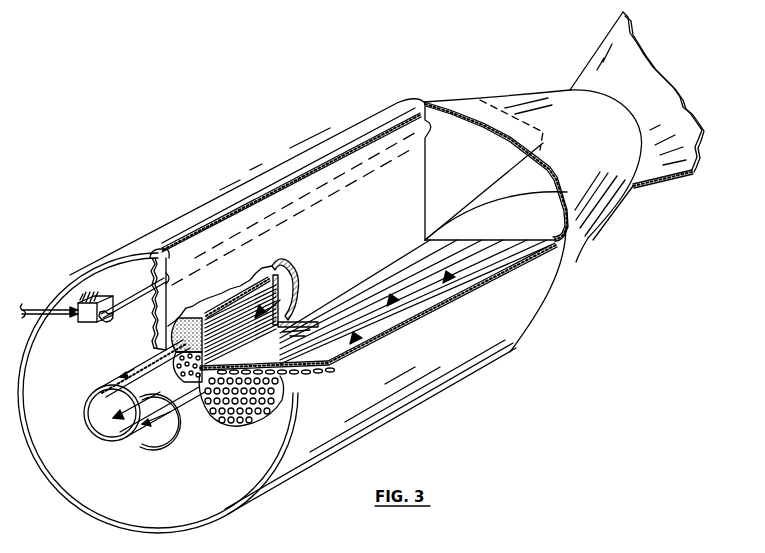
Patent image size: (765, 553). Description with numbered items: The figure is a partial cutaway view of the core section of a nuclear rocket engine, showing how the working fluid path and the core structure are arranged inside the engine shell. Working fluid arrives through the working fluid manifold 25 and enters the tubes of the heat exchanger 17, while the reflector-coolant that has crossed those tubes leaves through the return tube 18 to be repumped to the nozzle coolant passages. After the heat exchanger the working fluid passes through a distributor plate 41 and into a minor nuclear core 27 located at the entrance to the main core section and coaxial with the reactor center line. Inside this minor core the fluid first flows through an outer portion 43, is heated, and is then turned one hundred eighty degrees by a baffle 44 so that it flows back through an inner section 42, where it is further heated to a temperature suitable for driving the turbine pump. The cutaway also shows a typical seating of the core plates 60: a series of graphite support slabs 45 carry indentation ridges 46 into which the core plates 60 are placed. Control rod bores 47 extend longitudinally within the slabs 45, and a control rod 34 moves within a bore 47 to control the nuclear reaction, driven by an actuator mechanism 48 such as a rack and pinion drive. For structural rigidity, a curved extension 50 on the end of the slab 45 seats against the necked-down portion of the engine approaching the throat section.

The heat exchanger 17 is at (290, 378).
The return tube 18 is at (103, 385).
The working fluid manifold 25 is at (150, 322).
The minor nuclear core 27 is at (281, 300).
The control rod 34 is at (125, 303).
The distributor plate 41 is at (191, 316).
The inner section 42 is at (249, 297).
The outer portion 43 is at (300, 323).
The baffle 44 is at (296, 282).
The graphite support slab 45 is at (400, 217).
The indentation ridges 46 is at (428, 113).
The control rod bore 47 is at (348, 181).
The actuator mechanism 48 is at (86, 322).
The curved extension 50 is at (460, 142).
The core plates 60 is at (453, 290).